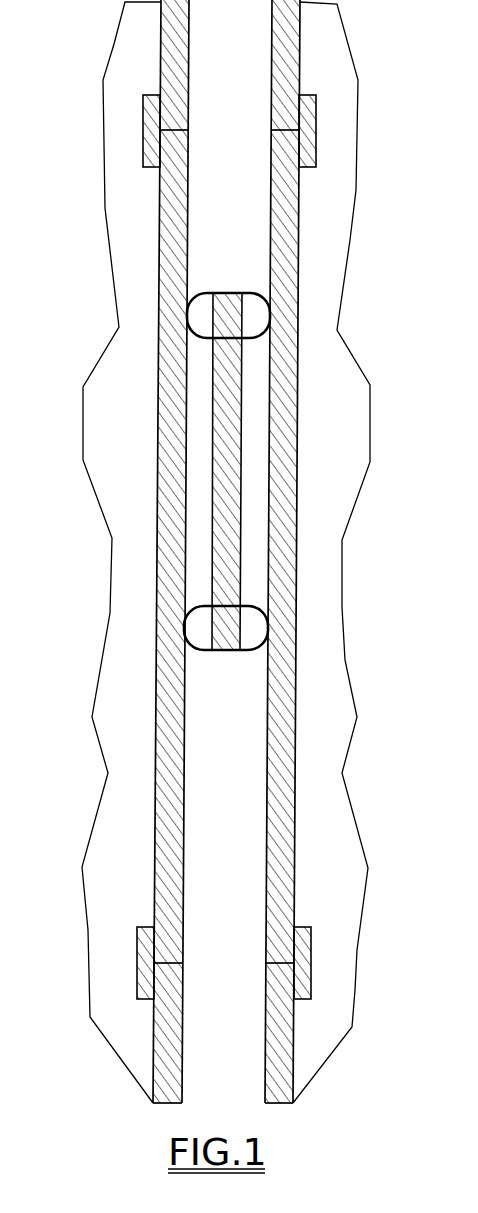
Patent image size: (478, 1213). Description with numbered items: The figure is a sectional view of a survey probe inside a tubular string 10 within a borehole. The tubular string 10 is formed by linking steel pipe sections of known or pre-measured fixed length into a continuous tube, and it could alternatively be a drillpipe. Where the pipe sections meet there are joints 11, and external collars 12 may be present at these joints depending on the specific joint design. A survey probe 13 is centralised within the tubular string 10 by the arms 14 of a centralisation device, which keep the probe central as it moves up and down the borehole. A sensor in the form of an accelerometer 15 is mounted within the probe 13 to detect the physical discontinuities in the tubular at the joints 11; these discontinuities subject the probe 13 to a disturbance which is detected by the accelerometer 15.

The tubular string 10 is at (297, 47).
The joints 11 is at (293, 127).
The external collars 12 is at (300, 965).
The survey probe 13 is at (241, 386).
The arms 14 is at (257, 292).
The accelerometer 15 is at (225, 457).